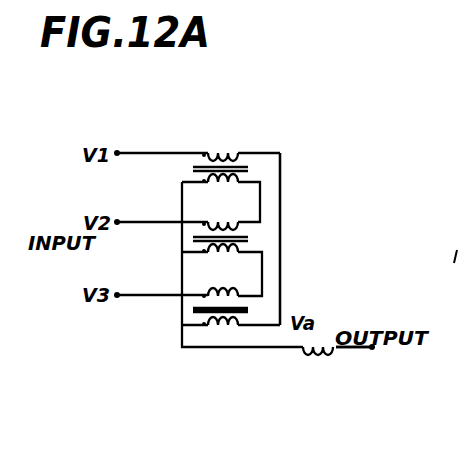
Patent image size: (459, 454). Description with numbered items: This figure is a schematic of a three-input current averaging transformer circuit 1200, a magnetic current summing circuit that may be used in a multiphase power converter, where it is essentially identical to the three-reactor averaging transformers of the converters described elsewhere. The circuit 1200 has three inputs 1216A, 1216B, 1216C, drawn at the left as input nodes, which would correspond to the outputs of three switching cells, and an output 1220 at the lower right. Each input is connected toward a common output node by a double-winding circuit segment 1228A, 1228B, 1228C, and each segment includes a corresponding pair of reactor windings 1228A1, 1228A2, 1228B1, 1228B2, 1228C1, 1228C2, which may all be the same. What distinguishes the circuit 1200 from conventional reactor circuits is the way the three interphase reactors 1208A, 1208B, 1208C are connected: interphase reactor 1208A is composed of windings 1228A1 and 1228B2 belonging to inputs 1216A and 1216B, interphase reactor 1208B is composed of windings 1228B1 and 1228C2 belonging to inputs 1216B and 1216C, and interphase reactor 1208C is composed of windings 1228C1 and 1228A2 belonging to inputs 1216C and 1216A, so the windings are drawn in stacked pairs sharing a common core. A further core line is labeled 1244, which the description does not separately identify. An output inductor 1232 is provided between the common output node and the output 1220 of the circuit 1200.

The three-input current averaging transformer circuit 1200 is at (318, 143).
The input 1216A is at (117, 150).
The input 1216B is at (118, 226).
The input 1216C is at (118, 297).
The reactor winding 1228A1 is at (212, 150).
The reactor winding 1228A2 is at (209, 325).
The double-winding circuit segment 1228A is at (263, 135).
The double-winding circuit segment 1228B is at (283, 200).
The reactor winding 1228B1 is at (206, 221).
The reactor winding 1228B2 is at (205, 182).
The double-winding circuit segment 1228C is at (283, 273).
The reactor winding 1228C1 is at (205, 296).
The reactor winding 1228C2 is at (206, 254).
The interphase reactor 1208A is at (283, 167).
The interphase reactor 1208B is at (283, 237).
The interphase reactor 1208C is at (283, 307).
The magnetic core 1244 is at (198, 312).
The output inductor 1232 is at (313, 358).
The output 1220 is at (362, 352).